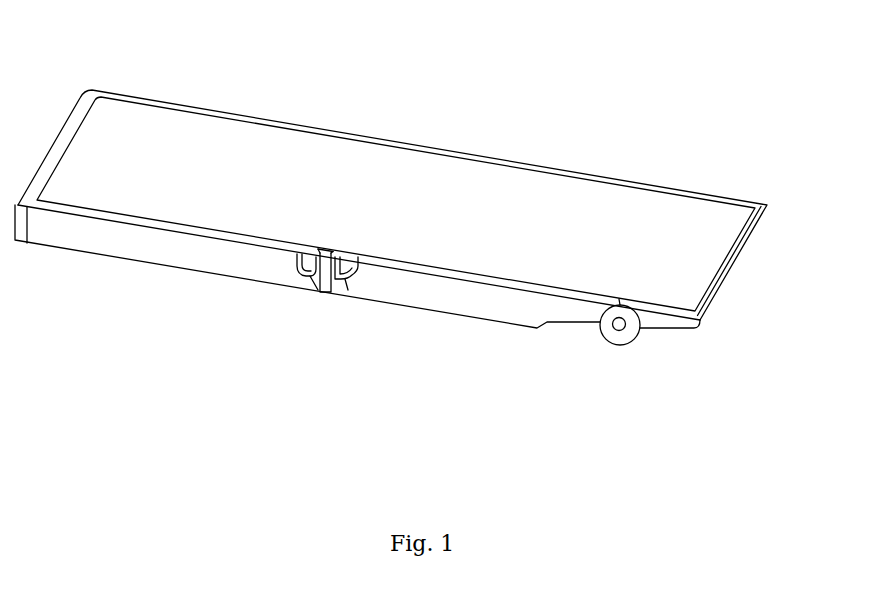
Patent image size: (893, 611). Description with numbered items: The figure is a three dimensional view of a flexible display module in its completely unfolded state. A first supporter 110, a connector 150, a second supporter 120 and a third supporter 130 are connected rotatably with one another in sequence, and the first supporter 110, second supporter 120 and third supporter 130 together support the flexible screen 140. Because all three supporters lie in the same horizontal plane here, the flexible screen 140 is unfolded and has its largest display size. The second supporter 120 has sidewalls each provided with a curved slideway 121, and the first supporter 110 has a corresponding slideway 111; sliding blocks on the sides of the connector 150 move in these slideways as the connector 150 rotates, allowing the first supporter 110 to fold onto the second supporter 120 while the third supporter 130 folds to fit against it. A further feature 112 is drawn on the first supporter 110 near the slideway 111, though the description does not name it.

The first supporter 110 is at (95, 235).
The slideway 111 is at (293, 268).
The latch tab 112 is at (328, 278).
The second supporter 120 is at (450, 292).
The curved slideway 121 is at (348, 288).
The third supporter 130 is at (642, 320).
The flexible screen 140 is at (560, 178).
The connector 150 is at (330, 253).